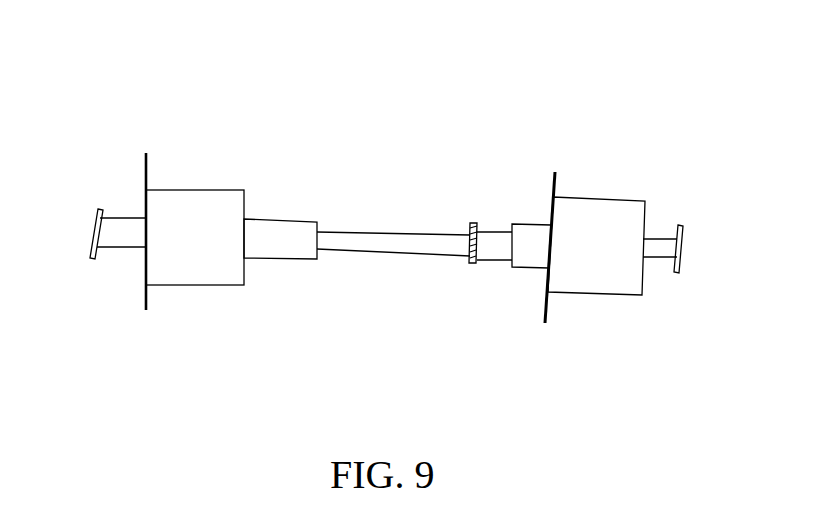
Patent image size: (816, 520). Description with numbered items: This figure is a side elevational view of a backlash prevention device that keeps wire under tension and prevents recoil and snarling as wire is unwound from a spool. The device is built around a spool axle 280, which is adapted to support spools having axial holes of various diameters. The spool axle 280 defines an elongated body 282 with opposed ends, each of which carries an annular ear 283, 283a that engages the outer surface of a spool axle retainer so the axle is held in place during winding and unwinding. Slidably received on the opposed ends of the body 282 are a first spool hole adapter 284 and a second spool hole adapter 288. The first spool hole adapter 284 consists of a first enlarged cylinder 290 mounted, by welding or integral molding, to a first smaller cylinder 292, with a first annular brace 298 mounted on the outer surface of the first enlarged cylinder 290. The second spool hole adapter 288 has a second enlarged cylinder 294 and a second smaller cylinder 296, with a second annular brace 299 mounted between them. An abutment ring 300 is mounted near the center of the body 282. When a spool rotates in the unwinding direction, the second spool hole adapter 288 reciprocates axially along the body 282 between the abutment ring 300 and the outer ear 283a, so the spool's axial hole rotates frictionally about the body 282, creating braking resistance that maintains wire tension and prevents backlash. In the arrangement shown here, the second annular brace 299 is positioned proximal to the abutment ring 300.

The spool axle 280 is at (305, 138).
The elongated body 282 is at (377, 235).
The annular ear 283 is at (97, 208).
The annular ear 283a is at (682, 228).
The first spool hole adapter 284 is at (250, 173).
The second spool hole adapter 288 is at (600, 157).
The first enlarged cylinder 290 is at (170, 270).
The first smaller cylinder 292 is at (300, 257).
The second enlarged cylinder 294 is at (613, 268).
The second smaller cylinder 296 is at (522, 268).
The first annular brace 298 is at (142, 292).
The second annular brace 299 is at (550, 312).
The abutment ring 300 is at (468, 261).